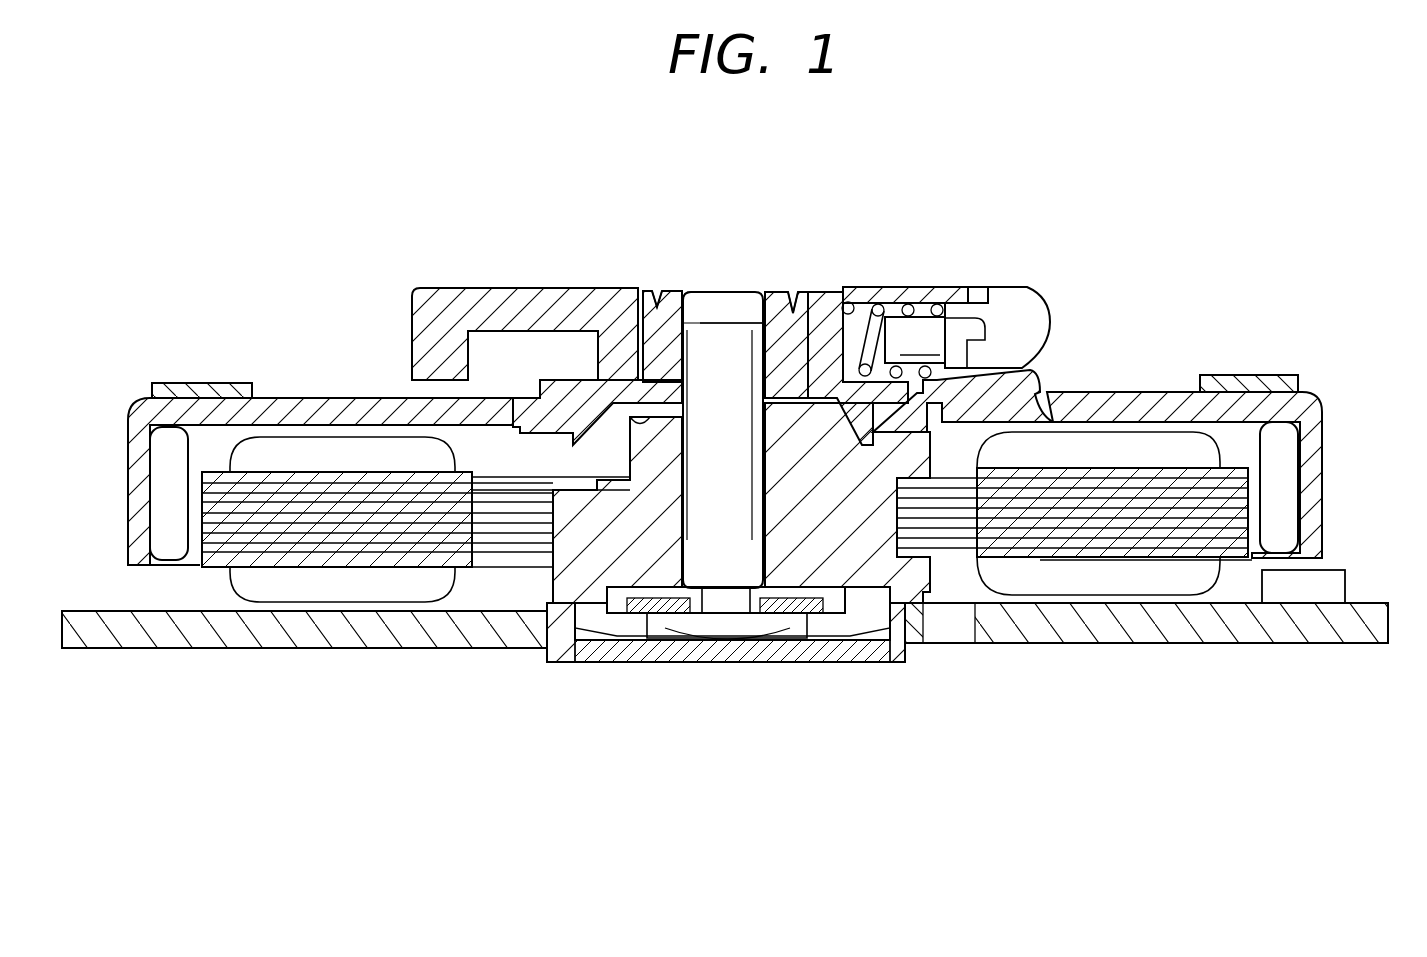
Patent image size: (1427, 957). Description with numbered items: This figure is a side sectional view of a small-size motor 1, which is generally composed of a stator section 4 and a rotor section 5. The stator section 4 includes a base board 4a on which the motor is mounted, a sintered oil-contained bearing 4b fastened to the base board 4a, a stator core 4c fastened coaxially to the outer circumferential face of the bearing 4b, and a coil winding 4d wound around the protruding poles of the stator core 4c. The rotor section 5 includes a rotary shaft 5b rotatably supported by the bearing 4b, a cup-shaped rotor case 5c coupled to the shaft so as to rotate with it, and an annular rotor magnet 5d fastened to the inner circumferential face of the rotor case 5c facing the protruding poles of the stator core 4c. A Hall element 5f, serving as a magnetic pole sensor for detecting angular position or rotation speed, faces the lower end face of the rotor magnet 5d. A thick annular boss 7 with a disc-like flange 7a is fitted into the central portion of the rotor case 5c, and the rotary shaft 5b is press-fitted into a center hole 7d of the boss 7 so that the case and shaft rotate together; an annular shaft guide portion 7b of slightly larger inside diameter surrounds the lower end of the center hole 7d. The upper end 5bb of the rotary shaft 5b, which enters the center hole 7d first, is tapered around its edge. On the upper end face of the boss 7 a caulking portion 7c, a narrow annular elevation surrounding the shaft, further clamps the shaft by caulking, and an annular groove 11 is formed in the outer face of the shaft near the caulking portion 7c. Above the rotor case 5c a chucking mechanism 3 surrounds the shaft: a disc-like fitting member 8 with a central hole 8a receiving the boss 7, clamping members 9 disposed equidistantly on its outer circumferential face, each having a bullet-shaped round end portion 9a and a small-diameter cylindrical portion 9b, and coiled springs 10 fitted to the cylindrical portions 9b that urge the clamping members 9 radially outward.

The motor 1 is at (1345, 409).
The chucking mechanism 3 is at (913, 274).
The stator section 4 is at (1262, 708).
The base board 4a is at (1253, 623).
The sintered oil-contained bearing 4b is at (905, 655).
The stator core 4c is at (1060, 535).
The coil winding 4d is at (1150, 578).
The rotor section 5 is at (292, 716).
The rotary shaft 5b is at (607, 592).
The upper end 5bb is at (728, 295).
The rotor case 5c is at (138, 550).
The rotor magnet 5d is at (170, 527).
The Hall element 5f is at (1335, 583).
The annular boss 7 is at (632, 340).
The disc-like flange 7a is at (565, 390).
The shaft guide portion 7b is at (763, 398).
The caulking portion 7c is at (777, 293).
The center hole 7d is at (702, 295).
The fitting member 8 is at (467, 288).
The hole 8a is at (773, 295).
The clamping member 9 is at (1057, 289).
The round end portion 9a is at (1032, 330).
The cylindrical portion 9b is at (960, 318).
The coiled spring 10 is at (874, 302).
The annular groove 11 is at (668, 303).